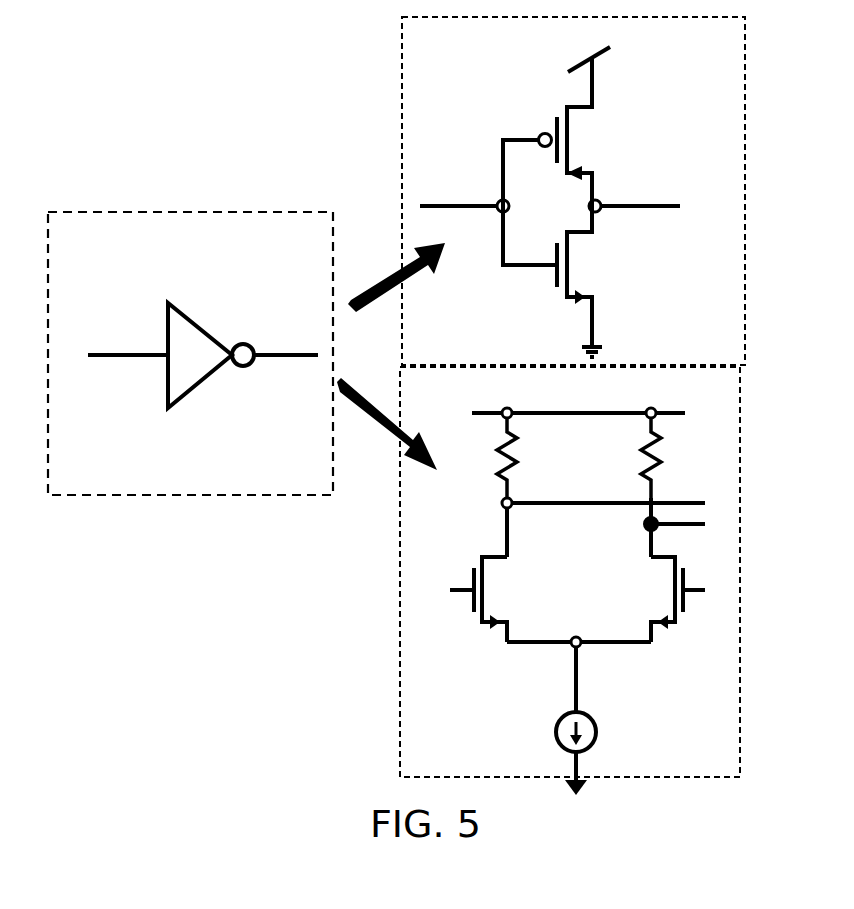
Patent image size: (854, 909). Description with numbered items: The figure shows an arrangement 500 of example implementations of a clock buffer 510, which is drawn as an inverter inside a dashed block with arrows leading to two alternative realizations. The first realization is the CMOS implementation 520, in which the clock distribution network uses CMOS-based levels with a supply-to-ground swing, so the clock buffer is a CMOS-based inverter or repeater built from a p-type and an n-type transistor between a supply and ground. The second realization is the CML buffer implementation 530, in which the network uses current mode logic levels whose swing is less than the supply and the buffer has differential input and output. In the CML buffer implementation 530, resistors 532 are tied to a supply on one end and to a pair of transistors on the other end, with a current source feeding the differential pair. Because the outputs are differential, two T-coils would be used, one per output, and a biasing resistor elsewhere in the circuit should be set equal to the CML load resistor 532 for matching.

The circuit system 500 is at (205, 97).
The clock buffer 510 is at (305, 261).
The CMOS implementation 520 is at (713, 69).
The CML buffer implementation 530 is at (723, 757).
The resistors 532 is at (562, 458).